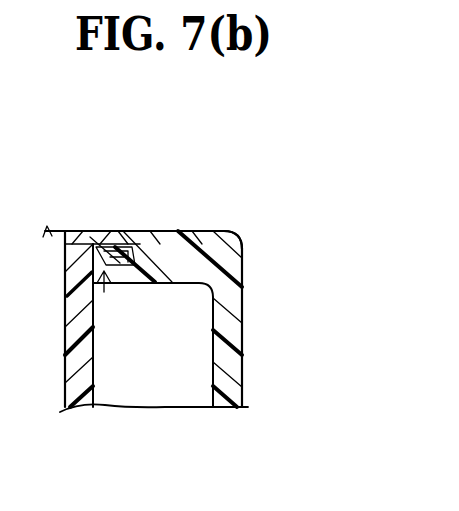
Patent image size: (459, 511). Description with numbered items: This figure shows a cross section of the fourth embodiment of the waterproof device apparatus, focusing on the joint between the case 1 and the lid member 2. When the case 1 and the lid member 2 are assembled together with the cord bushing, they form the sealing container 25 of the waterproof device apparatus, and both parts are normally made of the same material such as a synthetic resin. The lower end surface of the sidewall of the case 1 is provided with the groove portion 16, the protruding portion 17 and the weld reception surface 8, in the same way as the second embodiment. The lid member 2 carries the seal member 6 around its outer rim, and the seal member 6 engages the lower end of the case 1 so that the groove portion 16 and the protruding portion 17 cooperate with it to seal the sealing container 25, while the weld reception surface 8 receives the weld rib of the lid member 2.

The case 1 is at (243, 297).
The lid member 2 is at (66, 388).
The seal member 6 is at (97, 241).
The weld reception surface 8 is at (66, 294).
The groove portion 16 is at (130, 237).
The protruding portion 17 is at (63, 231).
The sealing container 25 is at (250, 250).